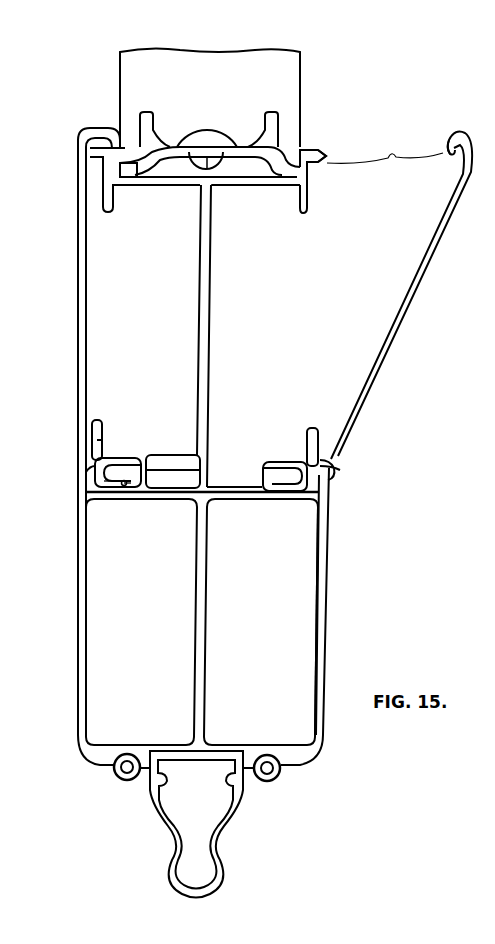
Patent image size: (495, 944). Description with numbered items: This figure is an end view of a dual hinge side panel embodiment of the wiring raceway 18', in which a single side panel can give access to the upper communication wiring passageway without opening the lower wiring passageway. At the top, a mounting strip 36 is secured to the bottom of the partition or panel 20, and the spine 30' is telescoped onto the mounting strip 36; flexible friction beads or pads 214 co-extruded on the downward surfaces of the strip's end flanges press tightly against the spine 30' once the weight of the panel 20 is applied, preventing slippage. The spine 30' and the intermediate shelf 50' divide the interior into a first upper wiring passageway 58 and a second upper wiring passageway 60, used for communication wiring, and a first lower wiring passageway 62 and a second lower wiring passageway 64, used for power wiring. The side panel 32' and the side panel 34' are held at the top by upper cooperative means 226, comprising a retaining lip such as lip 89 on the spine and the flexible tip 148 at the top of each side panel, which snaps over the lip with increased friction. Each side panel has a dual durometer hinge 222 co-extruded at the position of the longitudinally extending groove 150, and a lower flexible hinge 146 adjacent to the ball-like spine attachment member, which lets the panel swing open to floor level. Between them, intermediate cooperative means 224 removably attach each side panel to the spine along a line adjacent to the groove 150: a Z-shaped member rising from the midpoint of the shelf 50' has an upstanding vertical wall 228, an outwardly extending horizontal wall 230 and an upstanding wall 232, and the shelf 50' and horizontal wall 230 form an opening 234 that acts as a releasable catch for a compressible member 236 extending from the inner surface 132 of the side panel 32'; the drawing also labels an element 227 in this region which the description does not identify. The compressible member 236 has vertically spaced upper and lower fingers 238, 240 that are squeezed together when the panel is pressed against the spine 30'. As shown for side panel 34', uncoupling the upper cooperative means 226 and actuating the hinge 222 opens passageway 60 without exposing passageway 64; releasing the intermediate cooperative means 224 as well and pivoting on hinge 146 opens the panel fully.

The partition or panel 20 is at (301, 73).
The mounting strip 36 is at (167, 147).
The retaining lip 89 is at (322, 158).
The upper cooperative means 226 is at (385, 141).
The flexible tip 148 is at (451, 158).
The friction beads or pads 214 is at (145, 175).
The spine 30' is at (229, 336).
The first upper wiring passageway 58 is at (119, 246).
The second upper wiring passageway 60 is at (237, 244).
The side panel 32' is at (108, 517).
The side panel 34' is at (401, 295).
The upstanding wall 232 is at (93, 413).
The upper finger 238 is at (97, 440).
The horizontal wall 230 is at (120, 457).
The intermediate cooperative means 224 is at (145, 456).
The divider rib 227 is at (148, 469).
The upstanding vertical wall 228 is at (150, 470).
The dual durometer hinge 222 is at (88, 472).
The lower finger 240 is at (108, 484).
The opening 234 is at (128, 485).
The compressible member 236 is at (120, 488).
The intermediate shelf 50' is at (202, 504).
The longitudinally extending groove 150 is at (334, 470).
The inner surface 132 is at (79, 595).
The raceway 18' is at (350, 621).
The first lower wiring passageway 62 is at (141, 622).
The second lower wiring passageway 64 is at (261, 622).
The flexible hinge 146 is at (118, 780).